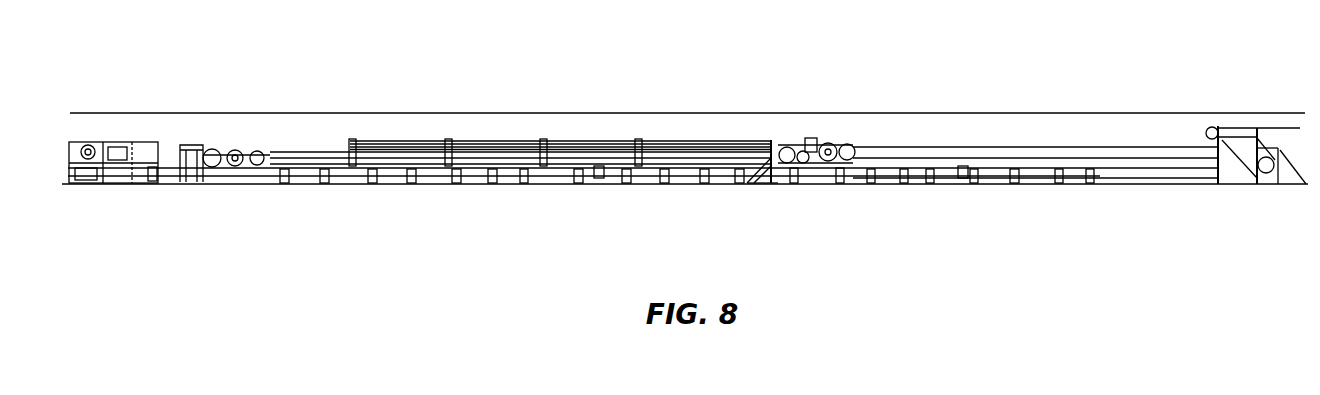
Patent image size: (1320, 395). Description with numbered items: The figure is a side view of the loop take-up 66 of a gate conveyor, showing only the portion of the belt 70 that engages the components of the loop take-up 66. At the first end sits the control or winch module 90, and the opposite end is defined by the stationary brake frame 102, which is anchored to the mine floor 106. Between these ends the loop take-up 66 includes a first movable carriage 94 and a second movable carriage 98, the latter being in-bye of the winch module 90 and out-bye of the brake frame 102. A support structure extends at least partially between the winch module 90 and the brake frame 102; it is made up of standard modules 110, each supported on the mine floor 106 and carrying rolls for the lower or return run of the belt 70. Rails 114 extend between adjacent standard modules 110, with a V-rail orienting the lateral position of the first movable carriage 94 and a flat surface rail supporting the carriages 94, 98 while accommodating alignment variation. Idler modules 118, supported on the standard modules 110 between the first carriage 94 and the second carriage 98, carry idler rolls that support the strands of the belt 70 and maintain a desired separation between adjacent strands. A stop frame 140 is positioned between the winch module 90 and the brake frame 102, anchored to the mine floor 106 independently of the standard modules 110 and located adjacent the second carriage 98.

The loop take-up 66 is at (300, 82).
The winch module 90 is at (96, 136).
The first movable carriage 94 is at (212, 150).
The idler modules 118 is at (450, 160).
The belt 70 is at (493, 142).
The rails 114 is at (598, 166).
The stop frame 140 is at (768, 158).
The second movable carriage 98 is at (837, 133).
The brake frame 102 is at (1270, 122).
The standard modules 110 is at (399, 192).
The mine floor 106 is at (1162, 180).